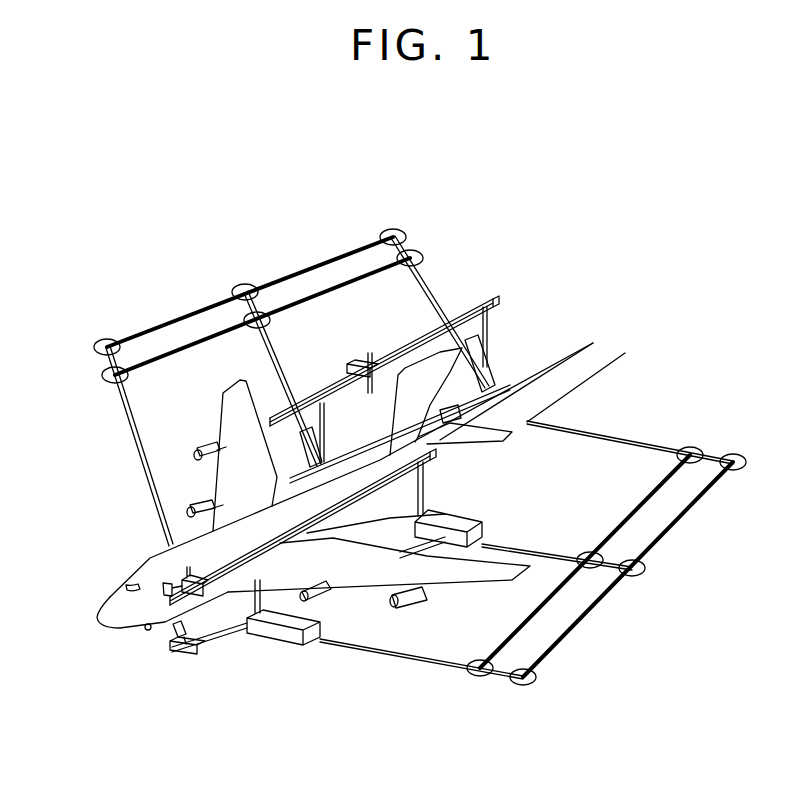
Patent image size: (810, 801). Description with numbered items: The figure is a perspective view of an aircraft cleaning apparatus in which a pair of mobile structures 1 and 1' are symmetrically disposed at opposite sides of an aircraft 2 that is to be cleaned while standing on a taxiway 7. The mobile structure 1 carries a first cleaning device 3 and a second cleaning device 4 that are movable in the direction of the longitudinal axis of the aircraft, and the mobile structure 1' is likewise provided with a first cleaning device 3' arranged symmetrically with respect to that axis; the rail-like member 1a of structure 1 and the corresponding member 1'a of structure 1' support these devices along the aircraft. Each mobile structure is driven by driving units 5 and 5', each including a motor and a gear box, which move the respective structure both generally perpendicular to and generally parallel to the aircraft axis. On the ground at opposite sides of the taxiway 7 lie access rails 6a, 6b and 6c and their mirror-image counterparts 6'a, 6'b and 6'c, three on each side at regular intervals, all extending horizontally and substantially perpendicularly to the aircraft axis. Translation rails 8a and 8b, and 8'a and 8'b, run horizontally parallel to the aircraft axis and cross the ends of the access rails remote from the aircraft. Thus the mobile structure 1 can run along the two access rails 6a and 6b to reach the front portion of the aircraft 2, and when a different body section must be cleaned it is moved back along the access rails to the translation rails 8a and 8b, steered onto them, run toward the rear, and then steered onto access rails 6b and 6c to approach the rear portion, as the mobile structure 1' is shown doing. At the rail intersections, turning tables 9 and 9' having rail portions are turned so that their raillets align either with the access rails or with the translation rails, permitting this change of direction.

The mobile structure 1 is at (324, 557).
The guide rail 1a is at (214, 578).
The mobile structure 1' is at (405, 372).
The second guide rail 1'a is at (384, 360).
The aircraft 2 is at (140, 562).
The first cleaning device 3 is at (195, 629).
The first cleaning device 3' is at (360, 352).
The second cleaning device 4 is at (177, 645).
The driving unit 5 is at (383, 592).
The driving unit 5' is at (395, 389).
The access rail 6a is at (396, 655).
The access rail 6b is at (546, 556).
The access rail 6c is at (601, 436).
The access rail 6'a is at (157, 446).
The access rail 6'b is at (290, 378).
The access rail 6'c is at (440, 312).
The taxiway 7 is at (533, 388).
The translation rail 8a is at (595, 610).
The translation rail 8b is at (552, 605).
The translation rail 8'a is at (250, 281).
The translation rail 8'b is at (262, 287).
The turning table 9 is at (606, 561).
The turning table 9' is at (256, 302).